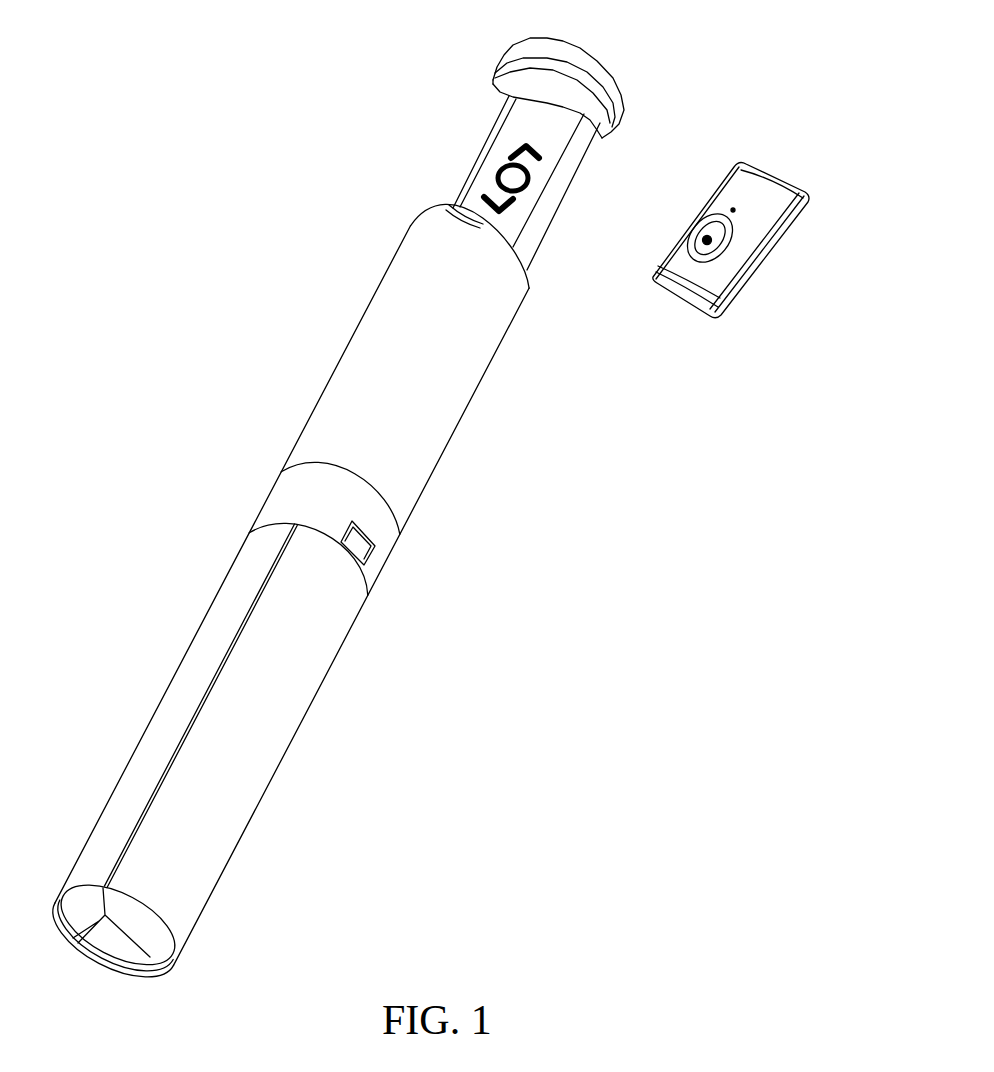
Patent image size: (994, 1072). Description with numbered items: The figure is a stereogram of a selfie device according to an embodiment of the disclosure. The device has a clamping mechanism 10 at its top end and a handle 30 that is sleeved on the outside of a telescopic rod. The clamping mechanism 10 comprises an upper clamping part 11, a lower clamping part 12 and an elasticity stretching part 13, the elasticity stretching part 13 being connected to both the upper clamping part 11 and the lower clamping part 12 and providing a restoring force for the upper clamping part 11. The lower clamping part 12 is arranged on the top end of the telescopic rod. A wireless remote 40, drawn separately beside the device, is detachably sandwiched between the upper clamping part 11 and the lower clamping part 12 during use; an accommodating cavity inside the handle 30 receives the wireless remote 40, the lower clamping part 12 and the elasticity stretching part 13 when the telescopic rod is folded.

The clamping mechanism 10 is at (393, 70).
The upper clamping part 11 is at (493, 82).
The lower clamping part 12 is at (456, 204).
The elasticity stretching part 13 is at (490, 157).
The handle 30 is at (341, 370).
The wireless remote 40 is at (684, 306).